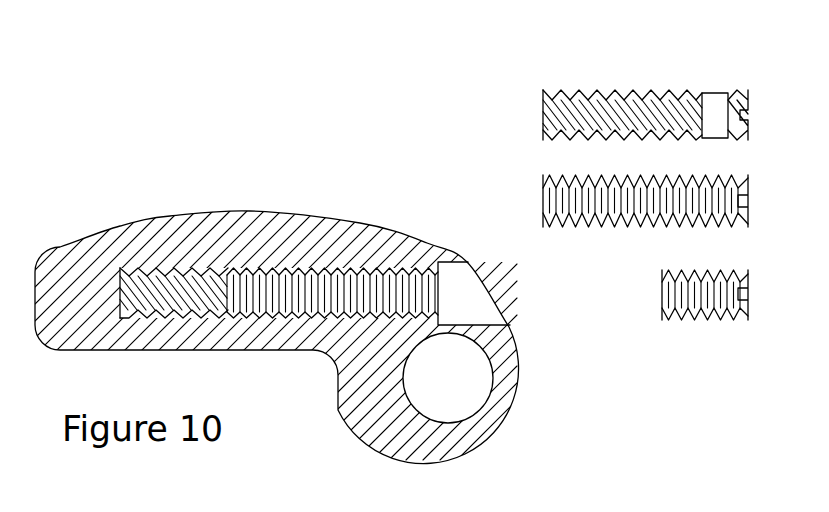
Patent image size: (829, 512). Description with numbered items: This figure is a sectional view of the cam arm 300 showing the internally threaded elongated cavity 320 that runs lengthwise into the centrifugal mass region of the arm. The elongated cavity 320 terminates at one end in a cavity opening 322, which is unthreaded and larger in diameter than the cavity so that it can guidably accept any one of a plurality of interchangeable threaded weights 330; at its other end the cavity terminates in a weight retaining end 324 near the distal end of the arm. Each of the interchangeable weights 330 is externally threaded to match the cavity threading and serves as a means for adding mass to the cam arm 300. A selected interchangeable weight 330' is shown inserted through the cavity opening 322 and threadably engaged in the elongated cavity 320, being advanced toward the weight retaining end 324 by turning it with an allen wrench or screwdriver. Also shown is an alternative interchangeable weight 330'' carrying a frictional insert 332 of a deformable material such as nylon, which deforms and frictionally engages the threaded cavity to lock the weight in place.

The cam arm 300 is at (372, 188).
The elongated cavity 320 is at (373, 290).
The cavity opening 322 is at (478, 295).
The weight retaining end 324 is at (120, 283).
The interchangeable threaded weights 330 is at (643, 247).
The selected interchangeable weight 330' is at (183, 233).
The alternative interchangeable weight 330'' is at (645, 77).
The frictional insert 332 is at (715, 107).